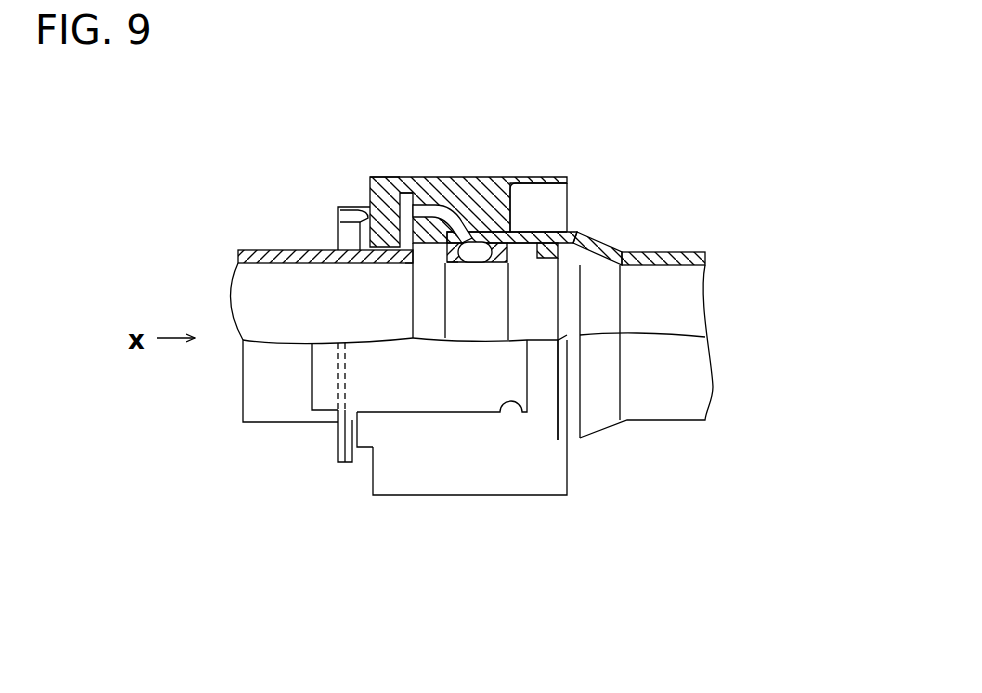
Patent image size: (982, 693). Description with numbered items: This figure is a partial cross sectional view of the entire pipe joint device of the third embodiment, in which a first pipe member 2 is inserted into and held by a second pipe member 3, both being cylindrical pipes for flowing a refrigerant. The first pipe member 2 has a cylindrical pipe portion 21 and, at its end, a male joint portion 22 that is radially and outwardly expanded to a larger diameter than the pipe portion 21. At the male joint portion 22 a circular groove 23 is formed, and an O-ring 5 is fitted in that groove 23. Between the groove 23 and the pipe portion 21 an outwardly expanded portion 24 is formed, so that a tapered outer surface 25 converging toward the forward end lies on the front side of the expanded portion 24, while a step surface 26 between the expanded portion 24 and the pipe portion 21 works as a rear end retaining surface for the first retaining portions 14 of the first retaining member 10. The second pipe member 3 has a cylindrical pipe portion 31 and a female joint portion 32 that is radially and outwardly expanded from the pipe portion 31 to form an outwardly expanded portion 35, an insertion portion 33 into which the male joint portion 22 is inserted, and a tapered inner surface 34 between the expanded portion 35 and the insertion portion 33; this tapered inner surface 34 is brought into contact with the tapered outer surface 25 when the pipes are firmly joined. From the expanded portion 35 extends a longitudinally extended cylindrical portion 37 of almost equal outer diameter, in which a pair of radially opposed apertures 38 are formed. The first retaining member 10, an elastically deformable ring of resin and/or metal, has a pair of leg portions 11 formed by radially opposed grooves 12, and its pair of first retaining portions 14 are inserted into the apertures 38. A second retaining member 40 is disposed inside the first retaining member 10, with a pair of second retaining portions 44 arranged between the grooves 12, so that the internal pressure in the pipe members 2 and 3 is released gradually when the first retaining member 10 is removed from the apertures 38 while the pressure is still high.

The first pipe member 2 is at (223, 236).
The cylindrical pipe portion 21 is at (253, 257).
The second pipe member 3 is at (672, 238).
The cylindrical pipe portion 31 is at (688, 255).
The insertion portion 33 is at (585, 240).
The female joint portion 32 is at (524, 218).
The first retaining member 10 is at (530, 175).
The leg portions 11 is at (482, 212).
The first retaining portions 14 is at (385, 176).
The apertures 38 is at (402, 190).
The outwardly expanded portion 24 is at (432, 212).
The tapered inner surface 34 is at (478, 232).
The outwardly expanded portion 35 is at (460, 243).
The longitudinally extended cylindrical portion 37 is at (338, 212).
The step surface 26 is at (360, 206).
The tapered outer surface 25 is at (410, 265).
The second retaining portions 44 is at (327, 383).
The second retaining member 40 is at (413, 377).
The O-ring 5 is at (488, 267).
The circular groove 23 is at (455, 268).
The grooves 12 is at (526, 268).
The male joint portion 22 is at (523, 265).